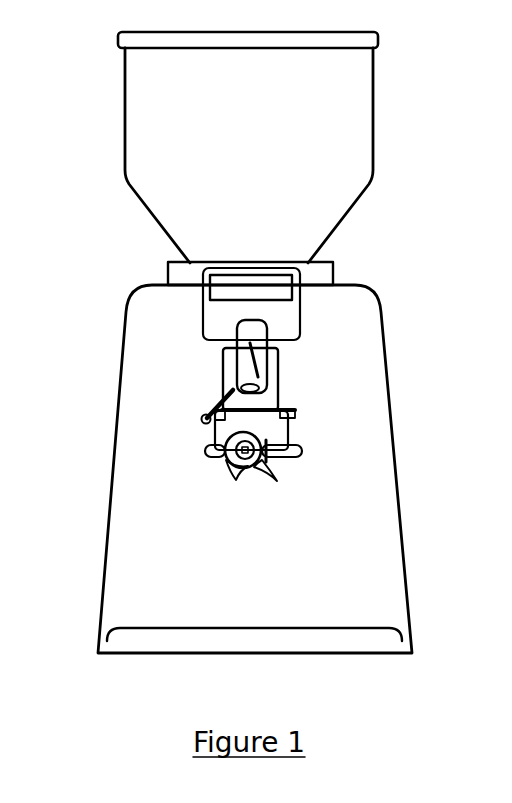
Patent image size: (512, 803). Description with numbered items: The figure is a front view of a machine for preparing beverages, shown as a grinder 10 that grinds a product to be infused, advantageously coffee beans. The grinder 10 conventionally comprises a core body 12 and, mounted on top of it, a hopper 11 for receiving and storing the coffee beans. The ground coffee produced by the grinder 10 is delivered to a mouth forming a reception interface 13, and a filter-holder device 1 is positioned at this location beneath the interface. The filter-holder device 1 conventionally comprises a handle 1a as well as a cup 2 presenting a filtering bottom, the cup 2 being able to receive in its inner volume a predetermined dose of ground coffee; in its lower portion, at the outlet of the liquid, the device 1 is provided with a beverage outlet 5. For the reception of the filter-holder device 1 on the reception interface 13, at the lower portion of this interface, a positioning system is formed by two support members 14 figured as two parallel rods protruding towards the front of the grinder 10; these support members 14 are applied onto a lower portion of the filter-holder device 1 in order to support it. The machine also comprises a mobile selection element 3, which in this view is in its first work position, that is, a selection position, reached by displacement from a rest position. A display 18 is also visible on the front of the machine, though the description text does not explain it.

The filter-holder device 1 is at (222, 465).
The handle 1a is at (223, 466).
The cup 2 is at (270, 403).
The selection element 3 is at (205, 418).
The beverage outlet 5 is at (267, 467).
The grinder 10 is at (170, 258).
The hopper 11 is at (167, 115).
The core body 12 is at (328, 392).
The reception interface 13 is at (237, 322).
The support members 14 is at (302, 450).
The display 18 is at (251, 304).